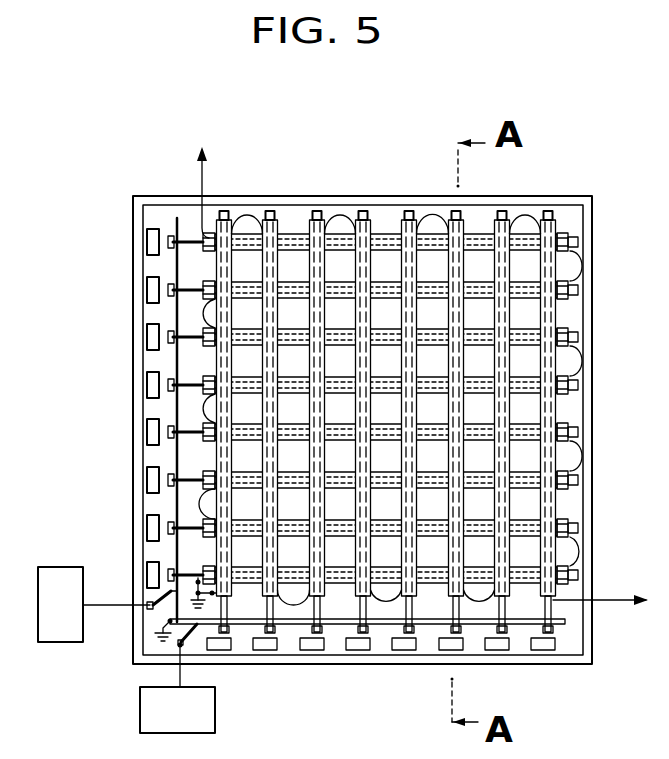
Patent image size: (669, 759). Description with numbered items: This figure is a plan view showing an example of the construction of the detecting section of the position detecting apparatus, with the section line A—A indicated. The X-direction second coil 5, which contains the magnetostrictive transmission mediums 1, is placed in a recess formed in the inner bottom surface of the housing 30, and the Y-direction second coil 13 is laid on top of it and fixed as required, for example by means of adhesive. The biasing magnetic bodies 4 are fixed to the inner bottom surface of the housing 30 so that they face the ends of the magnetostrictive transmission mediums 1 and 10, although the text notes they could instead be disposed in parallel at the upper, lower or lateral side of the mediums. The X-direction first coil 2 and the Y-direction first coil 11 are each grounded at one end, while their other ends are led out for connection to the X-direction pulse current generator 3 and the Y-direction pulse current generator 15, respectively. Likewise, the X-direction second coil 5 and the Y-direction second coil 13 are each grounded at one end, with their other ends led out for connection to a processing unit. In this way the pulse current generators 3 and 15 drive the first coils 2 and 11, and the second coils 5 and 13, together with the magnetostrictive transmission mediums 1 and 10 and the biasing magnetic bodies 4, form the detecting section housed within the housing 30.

The magnetostrictive transmission mediums 1 is at (585, 256).
The X-direction first coil 2 is at (150, 598).
The X-direction pulse current generator 3 is at (52, 567).
The biasing magnetic bodies 4 is at (150, 242).
The X-direction second coil 5 is at (579, 242).
The magnetostrictive transmission mediums 10 is at (247, 215).
The Y-direction first coil 11 is at (199, 627).
The Y-direction second coil 13 is at (224, 210).
The Y-direction pulse current generator 15 is at (215, 716).
The housing 30 is at (593, 662).